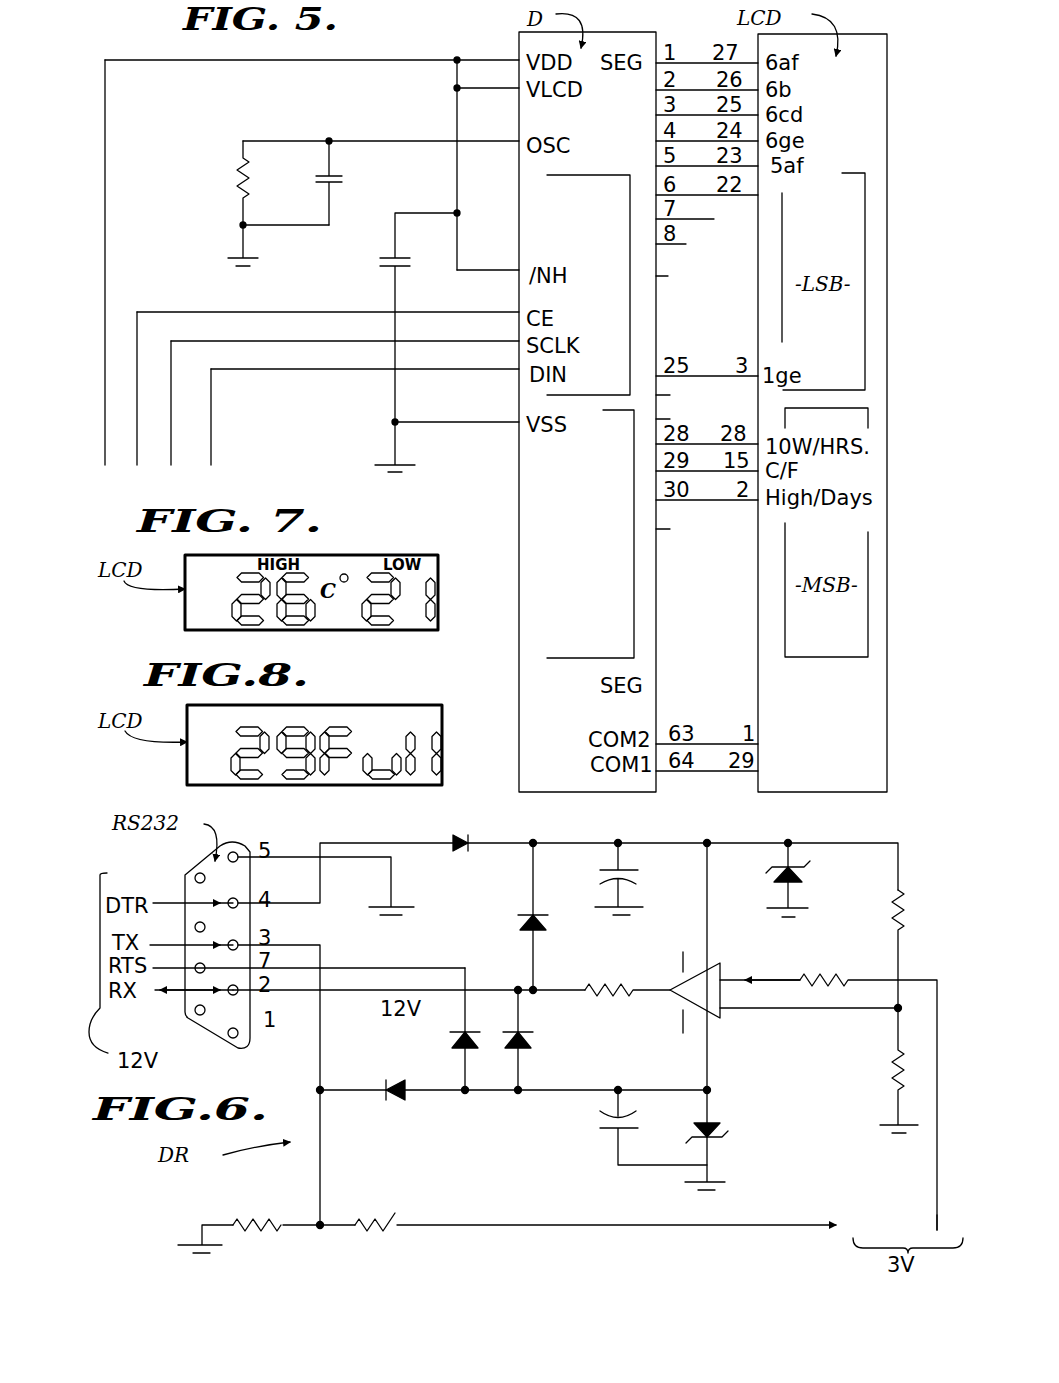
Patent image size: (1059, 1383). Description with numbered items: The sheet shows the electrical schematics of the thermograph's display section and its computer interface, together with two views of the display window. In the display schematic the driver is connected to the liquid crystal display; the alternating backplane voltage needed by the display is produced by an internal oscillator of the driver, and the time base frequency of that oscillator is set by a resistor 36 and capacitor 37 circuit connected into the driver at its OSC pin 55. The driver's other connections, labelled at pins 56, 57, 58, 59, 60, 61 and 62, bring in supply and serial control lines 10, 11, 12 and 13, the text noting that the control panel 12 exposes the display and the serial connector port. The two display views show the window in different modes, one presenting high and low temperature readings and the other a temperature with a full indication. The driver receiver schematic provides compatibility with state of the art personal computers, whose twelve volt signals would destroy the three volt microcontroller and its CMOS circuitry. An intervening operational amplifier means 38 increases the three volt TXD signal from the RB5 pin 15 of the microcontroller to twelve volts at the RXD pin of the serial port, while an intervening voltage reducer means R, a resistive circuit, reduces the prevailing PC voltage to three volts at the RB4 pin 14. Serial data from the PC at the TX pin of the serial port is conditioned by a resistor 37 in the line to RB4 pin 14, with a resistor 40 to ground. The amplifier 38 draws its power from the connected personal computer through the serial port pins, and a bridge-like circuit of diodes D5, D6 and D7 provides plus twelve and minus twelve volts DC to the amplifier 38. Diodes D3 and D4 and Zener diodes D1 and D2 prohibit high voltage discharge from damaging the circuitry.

In FIG. 5, the data input line 10 is at (213, 429).
In FIG. 5, the serial clock line 11 is at (178, 415).
In FIG. 5, the control panel 12 is at (143, 401).
In FIG. 5, the supply line 13 is at (108, 275).
In FIG. 6, the RB4 pin 14 is at (634, 1230).
In FIG. 6, the RB5 pin 15 is at (954, 1228).
In FIG. 5, the resistor 36 is at (213, 183).
In FIG. 5, the capacitor / resistor 37 is at (355, 182).
In FIG. 6, the capacitor / resistor 37 is at (381, 1215).
In FIG. 6, the operational amplifier means 38 is at (724, 964).
In FIG. 6, the resistor 40 is at (260, 1212).
In FIG. 5, the OSC pin 55 is at (381, 132).
In FIG. 5, the VDD pin 56 is at (312, 51).
In FIG. 5, the /NH pin 57 is at (488, 260).
In FIG. 5, the VLCD pin 58 is at (486, 165).
In FIG. 5, the VSS pin 59 is at (457, 413).
In FIG. 5, the CE pin 60 is at (328, 302).
In FIG. 5, the SCLK pin 61 is at (345, 331).
In FIG. 5, the DIN pin 62 is at (365, 359).
In FIG. 6, the Zener diode D1 is at (806, 871).
In FIG. 6, the Zener diode D2 is at (729, 1131).
In FIG. 6, the diode D3 is at (545, 932).
In FIG. 6, the diode D4 is at (533, 1040).
In FIG. 6, the diode D5 is at (447, 1035).
In FIG. 6, the diode D6 is at (457, 858).
In FIG. 6, the diode D7 is at (394, 1084).
In FIG. 6, the voltage reducer means R is at (497, 1068).